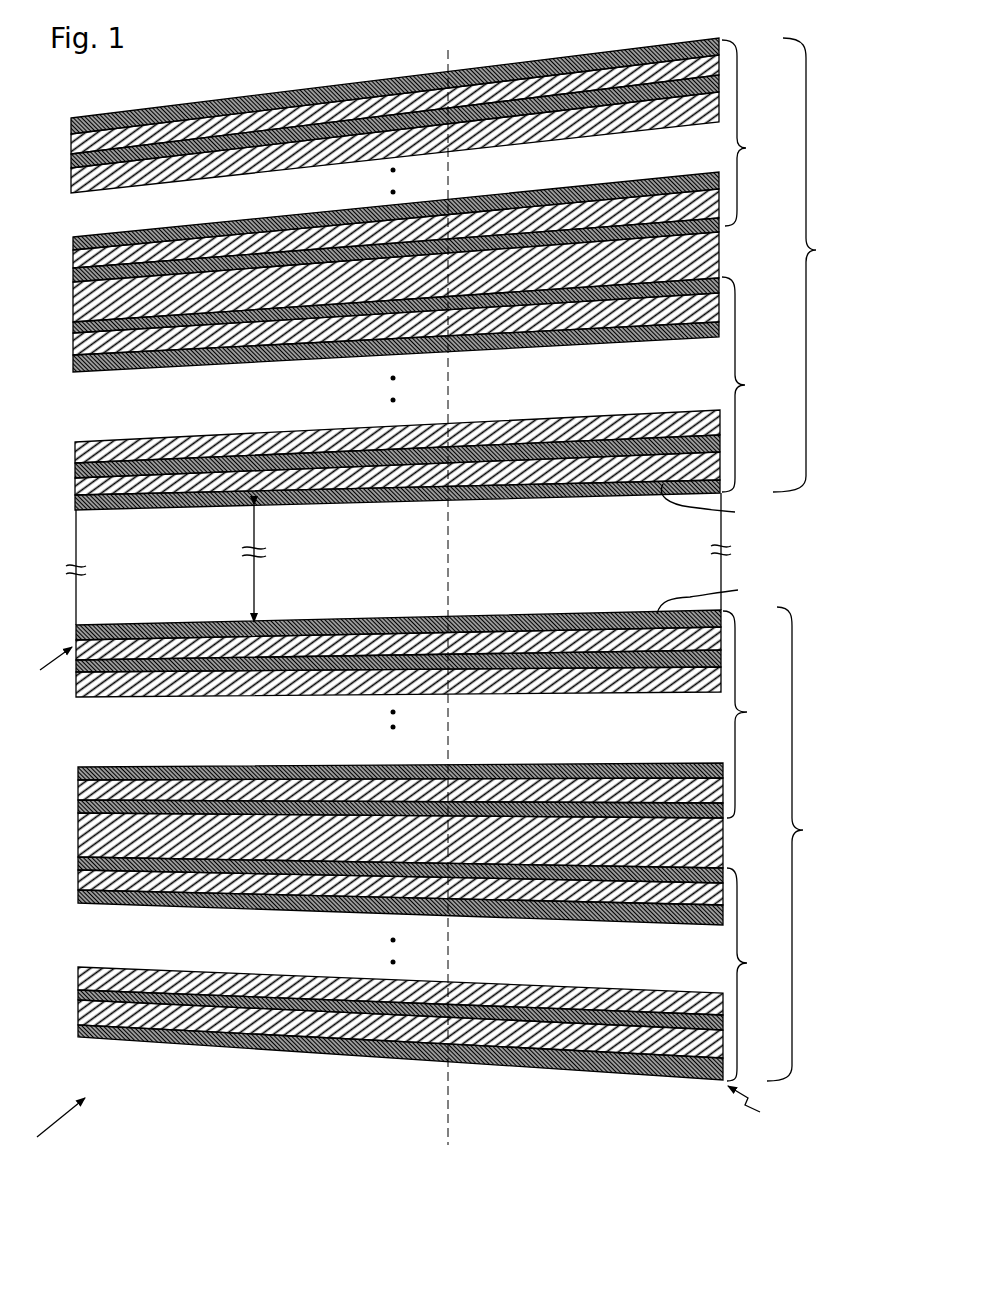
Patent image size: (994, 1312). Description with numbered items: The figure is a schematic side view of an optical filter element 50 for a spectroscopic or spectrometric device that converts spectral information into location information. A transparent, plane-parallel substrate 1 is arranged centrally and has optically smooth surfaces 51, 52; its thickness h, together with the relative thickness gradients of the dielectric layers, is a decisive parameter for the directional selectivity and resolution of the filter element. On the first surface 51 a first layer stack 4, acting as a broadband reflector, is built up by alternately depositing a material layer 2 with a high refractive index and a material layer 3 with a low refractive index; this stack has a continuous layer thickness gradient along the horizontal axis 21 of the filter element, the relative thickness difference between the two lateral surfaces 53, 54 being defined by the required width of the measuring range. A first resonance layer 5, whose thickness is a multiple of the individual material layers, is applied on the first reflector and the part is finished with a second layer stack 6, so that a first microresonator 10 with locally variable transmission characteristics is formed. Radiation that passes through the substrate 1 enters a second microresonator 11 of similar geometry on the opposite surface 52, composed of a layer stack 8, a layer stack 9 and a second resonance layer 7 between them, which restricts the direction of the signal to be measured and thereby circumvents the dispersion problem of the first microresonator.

The substrate 1 is at (174, 583).
The material layer with high refractive index 2 is at (75, 506).
The material layer with low refractive index 3 is at (74, 454).
The first layer stack 4 is at (749, 386).
The first resonance layer 5 is at (73, 302).
The second layer stack 6 is at (750, 149).
The second resonance layer 7 is at (86, 828).
The layer stack 8 is at (750, 713).
The layer stack 9 is at (750, 964).
The first microresonator 10 is at (820, 253).
The second microresonator 11 is at (806, 831).
The horizontal axis of filter element 21 is at (452, 58).
The optical filter element 50 is at (47, 1132).
The first surface 51 is at (715, 508).
The second surface 52 is at (713, 598).
The lateral surface 53 is at (46, 671).
The lateral surface 54 is at (759, 1110).
The thickness of the substrate h is at (256, 572).